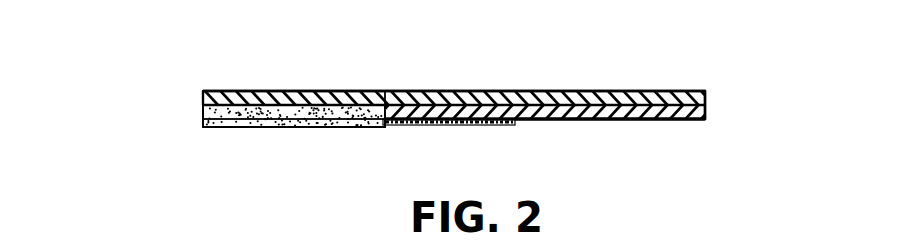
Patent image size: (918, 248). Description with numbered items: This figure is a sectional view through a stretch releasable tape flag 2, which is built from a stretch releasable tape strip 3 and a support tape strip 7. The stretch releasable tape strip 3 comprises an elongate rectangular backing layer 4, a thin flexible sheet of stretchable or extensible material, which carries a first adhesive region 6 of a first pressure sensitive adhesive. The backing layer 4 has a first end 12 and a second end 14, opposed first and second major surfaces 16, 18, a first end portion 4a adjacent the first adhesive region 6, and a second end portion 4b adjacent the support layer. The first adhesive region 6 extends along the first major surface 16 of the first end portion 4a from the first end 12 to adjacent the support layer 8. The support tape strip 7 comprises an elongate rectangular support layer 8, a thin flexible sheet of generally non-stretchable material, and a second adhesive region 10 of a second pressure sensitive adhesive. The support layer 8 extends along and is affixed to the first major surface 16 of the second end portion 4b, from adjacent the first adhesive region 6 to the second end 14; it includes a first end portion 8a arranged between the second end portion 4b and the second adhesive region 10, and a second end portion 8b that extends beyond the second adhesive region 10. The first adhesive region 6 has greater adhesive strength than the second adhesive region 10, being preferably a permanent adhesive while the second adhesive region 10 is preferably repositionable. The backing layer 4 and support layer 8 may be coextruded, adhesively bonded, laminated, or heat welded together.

The stretch releasable tape flag 2 is at (247, 46).
The stretch releasable tape strip 3 is at (190, 139).
The backing layer 4 is at (670, 91).
The first end portion 4a is at (275, 100).
The second end portion 4b is at (585, 92).
The first adhesive region 6 is at (255, 128).
The support tape strip 7 is at (630, 136).
The support layer 8 is at (668, 121).
The first end portion 8a is at (491, 115).
The second end portion 8b is at (588, 120).
The second adhesive region 10 is at (415, 125).
The first end 12 is at (204, 98).
The second end 14 is at (706, 95).
The first major surface 16 is at (565, 118).
The second major surface 18 is at (526, 91).